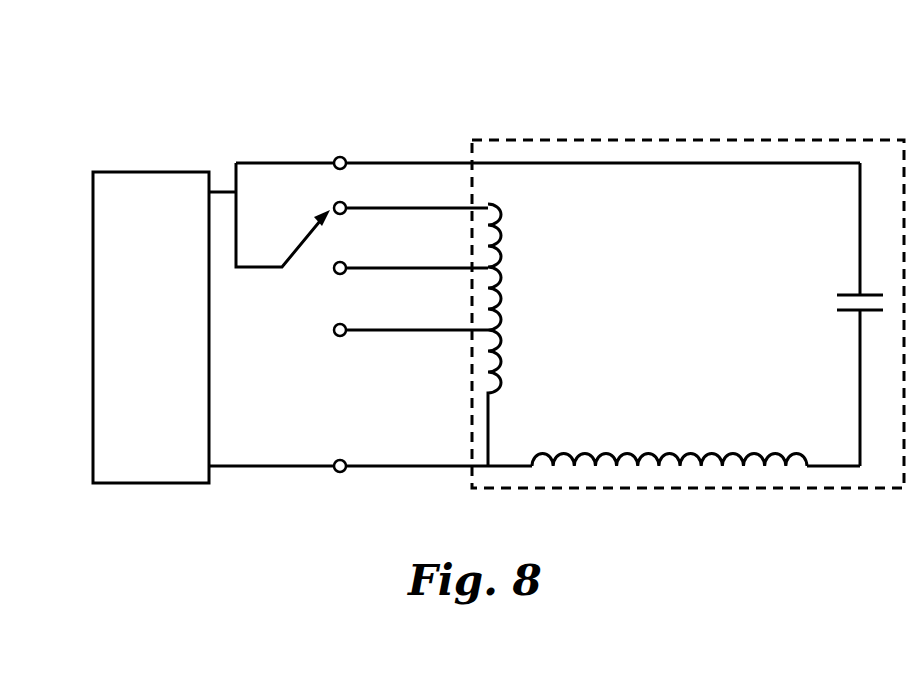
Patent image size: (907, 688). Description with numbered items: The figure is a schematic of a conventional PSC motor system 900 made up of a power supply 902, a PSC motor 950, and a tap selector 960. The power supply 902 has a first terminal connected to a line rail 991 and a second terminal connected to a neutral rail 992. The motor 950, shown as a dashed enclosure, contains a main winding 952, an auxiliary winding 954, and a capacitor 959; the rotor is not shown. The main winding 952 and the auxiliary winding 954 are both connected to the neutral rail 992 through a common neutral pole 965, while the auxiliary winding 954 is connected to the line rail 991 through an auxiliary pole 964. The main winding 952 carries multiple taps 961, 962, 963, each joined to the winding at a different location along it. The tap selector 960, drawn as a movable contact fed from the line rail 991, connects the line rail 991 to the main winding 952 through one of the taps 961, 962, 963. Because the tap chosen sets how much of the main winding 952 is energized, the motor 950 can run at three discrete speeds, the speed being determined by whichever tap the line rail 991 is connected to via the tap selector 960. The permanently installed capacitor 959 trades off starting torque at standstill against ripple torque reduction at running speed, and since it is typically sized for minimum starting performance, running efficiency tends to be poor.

The PSC motor system 900 is at (233, 57).
The power supply 902 is at (151, 327).
The line rail 991 is at (227, 190).
The neutral rail 992 is at (262, 462).
The tap selector 960 is at (290, 300).
The tap 961 is at (345, 199).
The tap 962 is at (345, 259).
The tap 963 is at (345, 321).
The auxiliary pole 964 is at (345, 153).
The common neutral pole 965 is at (345, 459).
The PSC motor 950 is at (694, 138).
The main winding 952 is at (507, 296).
The auxiliary winding 954 is at (703, 443).
The capacitor 959 is at (843, 283).